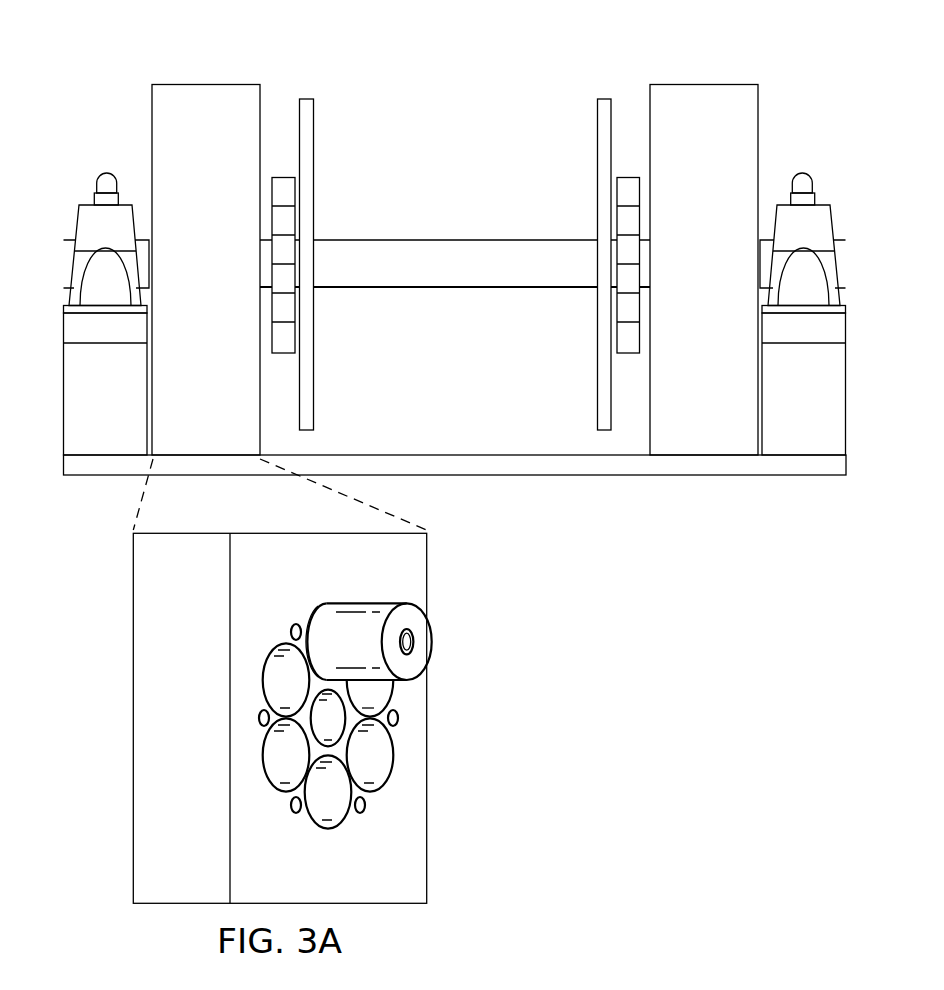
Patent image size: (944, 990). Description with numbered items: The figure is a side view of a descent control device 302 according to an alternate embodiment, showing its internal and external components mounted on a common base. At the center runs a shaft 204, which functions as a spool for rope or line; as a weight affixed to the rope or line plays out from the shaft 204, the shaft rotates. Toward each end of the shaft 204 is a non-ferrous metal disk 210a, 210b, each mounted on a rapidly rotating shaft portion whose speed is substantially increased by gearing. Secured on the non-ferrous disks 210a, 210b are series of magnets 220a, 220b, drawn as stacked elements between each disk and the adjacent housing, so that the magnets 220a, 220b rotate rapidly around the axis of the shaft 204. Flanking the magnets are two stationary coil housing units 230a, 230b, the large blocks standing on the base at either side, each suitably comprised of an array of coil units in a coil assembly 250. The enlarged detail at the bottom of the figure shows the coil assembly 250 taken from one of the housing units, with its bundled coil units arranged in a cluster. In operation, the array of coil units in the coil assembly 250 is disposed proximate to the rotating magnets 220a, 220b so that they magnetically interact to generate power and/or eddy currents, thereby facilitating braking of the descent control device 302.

The winding assembly 302 is at (536, 70).
The stationary coil housing unit 230a is at (205, 84).
The stationary coil housing unit 230b is at (703, 84).
The non-ferrous metal disk 210a is at (314, 138).
The non-ferrous metal disk 210b is at (597, 138).
The magnets 220a is at (271, 190).
The magnets 220b is at (640, 189).
The shaft 204 is at (453, 240).
The coil assembly 250 is at (118, 718).